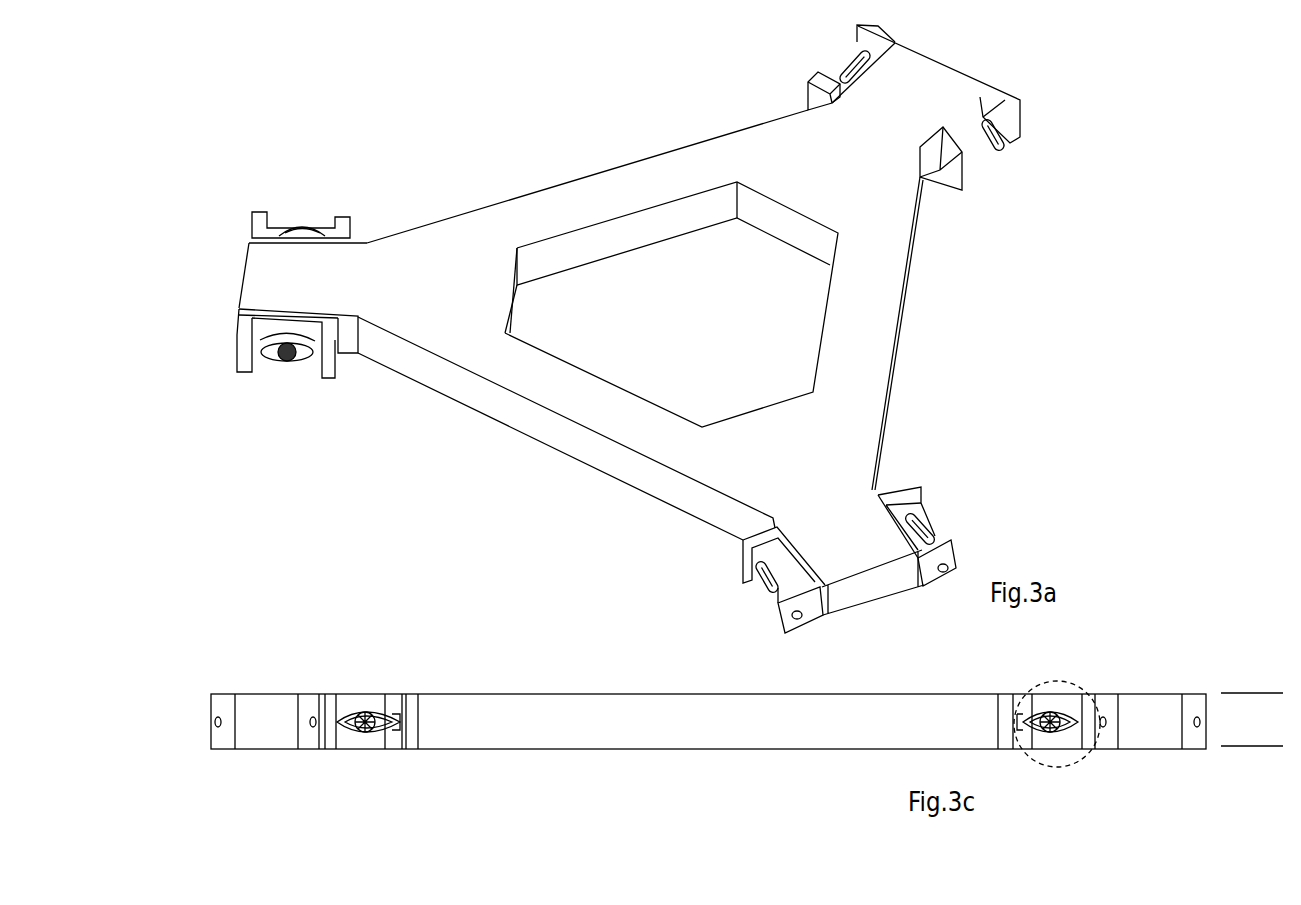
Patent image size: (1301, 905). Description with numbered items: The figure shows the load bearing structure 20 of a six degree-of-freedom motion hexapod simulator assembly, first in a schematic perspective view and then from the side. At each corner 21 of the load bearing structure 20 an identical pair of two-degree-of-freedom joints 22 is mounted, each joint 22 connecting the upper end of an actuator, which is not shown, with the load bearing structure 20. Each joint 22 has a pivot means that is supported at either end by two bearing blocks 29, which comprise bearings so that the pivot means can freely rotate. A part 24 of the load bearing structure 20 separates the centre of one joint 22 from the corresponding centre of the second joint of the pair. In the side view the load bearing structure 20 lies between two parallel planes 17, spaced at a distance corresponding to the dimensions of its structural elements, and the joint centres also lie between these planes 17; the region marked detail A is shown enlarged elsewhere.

In FIG. 3A, the corner 21 is at (362, 275).
In FIG. 3A, the part of the load bearing structure 24 is at (258, 221).
In FIG. 3C, the part of the load bearing structure 24 is at (260, 706).
In FIG. 3A, the two-degree-of-freedom joint 22 is at (290, 357).
In FIG. 3C, the load bearing structure 20 is at (473, 703).
In FIG. 3C, the bearing block 29 is at (225, 700).
In FIG. 3C, the parallel planes 17 is at (1248, 692).
In FIG. 3C, the detail A is at (1087, 758).